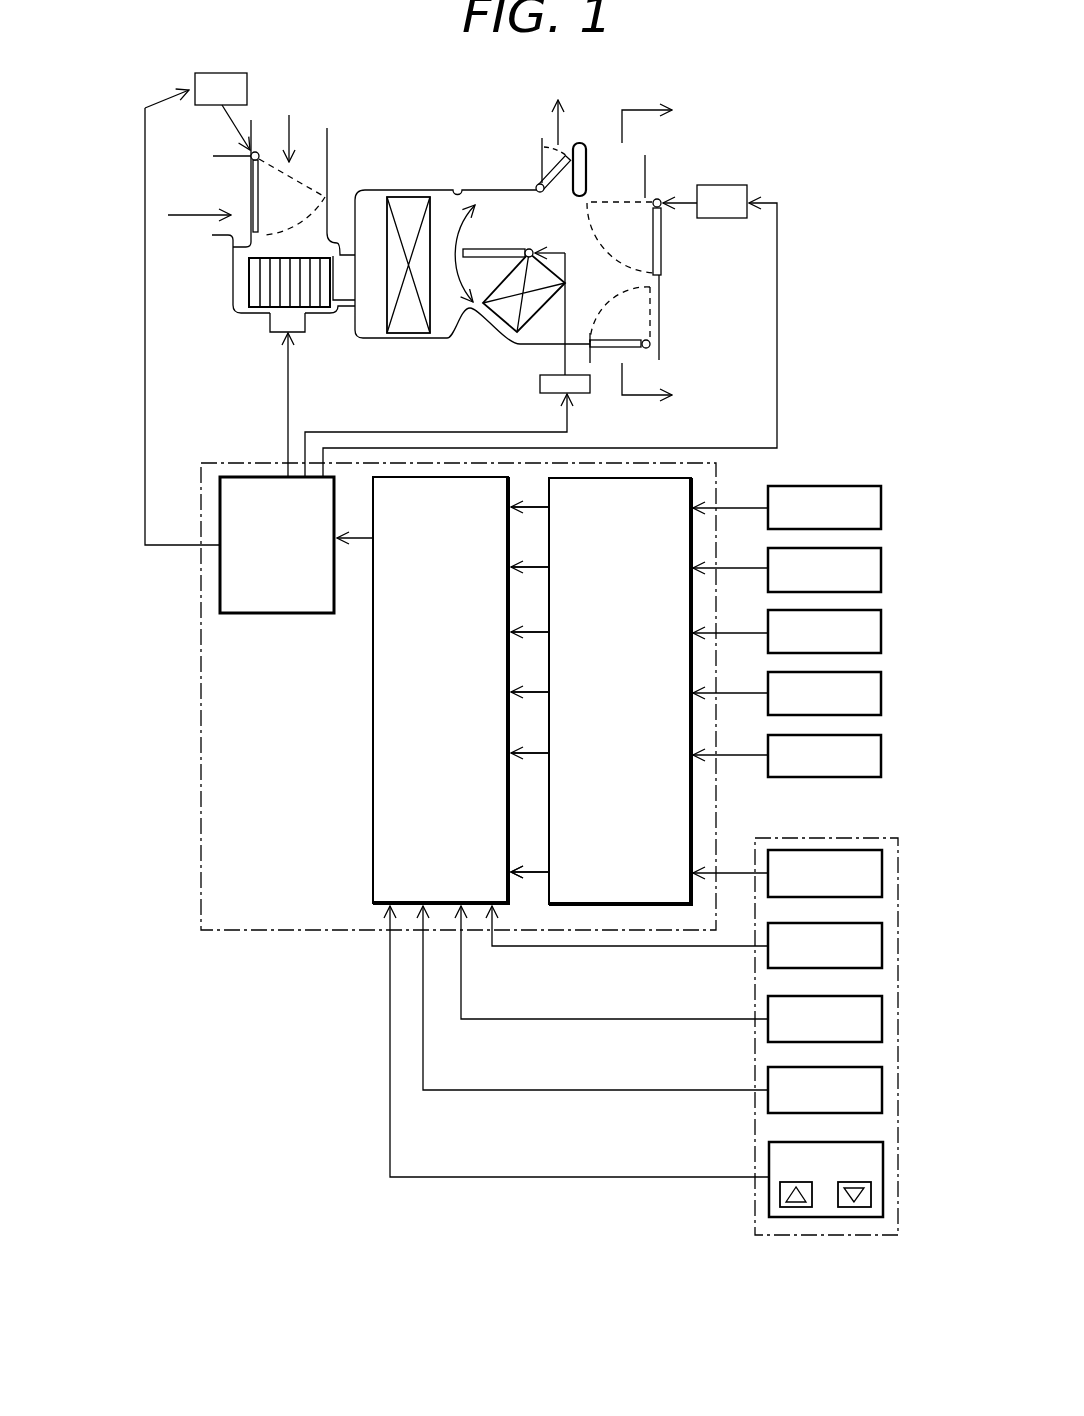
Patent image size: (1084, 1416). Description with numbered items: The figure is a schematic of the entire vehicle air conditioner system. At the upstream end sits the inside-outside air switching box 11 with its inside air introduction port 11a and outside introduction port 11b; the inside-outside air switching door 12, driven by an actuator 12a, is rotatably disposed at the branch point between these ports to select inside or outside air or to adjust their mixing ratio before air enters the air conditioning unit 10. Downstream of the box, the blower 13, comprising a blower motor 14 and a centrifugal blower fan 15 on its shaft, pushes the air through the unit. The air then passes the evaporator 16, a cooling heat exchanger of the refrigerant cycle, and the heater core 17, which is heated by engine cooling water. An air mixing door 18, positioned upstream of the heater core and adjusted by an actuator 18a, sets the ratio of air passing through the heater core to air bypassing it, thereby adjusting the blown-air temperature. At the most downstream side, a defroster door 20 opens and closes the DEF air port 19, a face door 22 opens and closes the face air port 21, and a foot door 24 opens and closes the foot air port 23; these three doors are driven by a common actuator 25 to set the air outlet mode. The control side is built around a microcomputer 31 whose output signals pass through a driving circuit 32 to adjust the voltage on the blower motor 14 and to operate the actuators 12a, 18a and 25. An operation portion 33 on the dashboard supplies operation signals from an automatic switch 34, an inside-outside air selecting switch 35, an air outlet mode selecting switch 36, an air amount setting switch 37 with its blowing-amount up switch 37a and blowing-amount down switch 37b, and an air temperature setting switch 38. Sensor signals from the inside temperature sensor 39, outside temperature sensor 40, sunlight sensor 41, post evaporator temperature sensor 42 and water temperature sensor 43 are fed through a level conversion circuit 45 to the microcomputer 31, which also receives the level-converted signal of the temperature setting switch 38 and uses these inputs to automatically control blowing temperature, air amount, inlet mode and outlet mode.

The air conditioning unit 10 is at (413, 188).
The inside-outside air switching box 11 is at (250, 150).
The inside air introduction port 11a is at (312, 135).
The outside introduction port 11b is at (232, 228).
The inside-outside air switching door 12 is at (240, 158).
The actuator 12a is at (208, 73).
The blower 13 is at (233, 310).
The blower motor 14 is at (282, 328).
The centrifugal blower fan 15 is at (249, 285).
The evaporator 16 is at (410, 320).
The heater core 17 is at (510, 310).
The air mixing door 18 is at (495, 247).
The actuator 18a is at (540, 383).
The DEF air port 19 is at (547, 142).
The defroster door 20 is at (566, 152).
The face air port 21 is at (615, 180).
The face door 22 is at (662, 247).
The foot air port 23 is at (607, 353).
The foot door 24 is at (625, 337).
The actuator 25 is at (727, 192).
The microcomputer 31 is at (373, 717).
The driving circuit 32 is at (270, 614).
The operation portion 33 is at (898, 905).
The automatic switch 34 is at (883, 946).
The inside-outside air selecting switch 35 is at (883, 1019).
The air outlet mode selecting switch 36 is at (883, 1090).
The air amount setting switch 37 is at (666, 1089).
The blowing-amount up switch 37a is at (796, 1208).
The blowing-amount down switch 37b is at (857, 1208).
The air temperature setting switch 38 is at (883, 873).
The inside temperature sensor 39 is at (882, 508).
The outside temperature sensor 40 is at (882, 570).
The sunlight sensor 41 is at (882, 632).
The post evaporator temperature sensor 42 is at (882, 693).
The water temperature sensor 43 is at (882, 756).
The level conversion circuit 45 is at (691, 810).